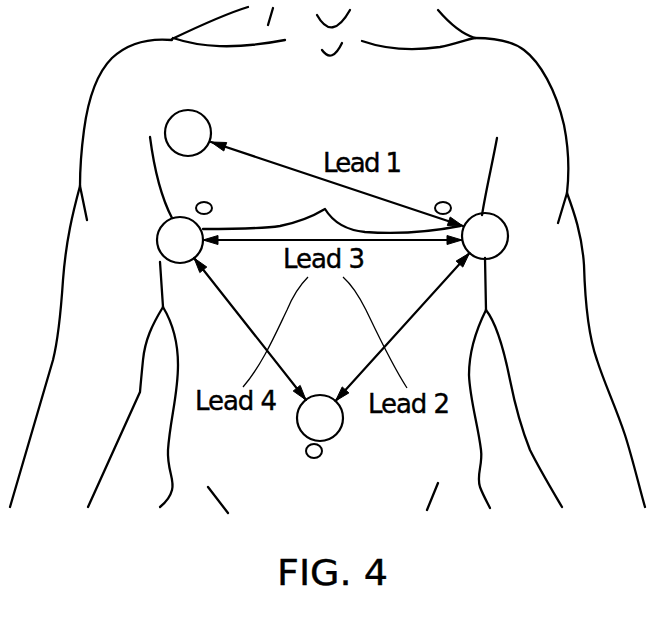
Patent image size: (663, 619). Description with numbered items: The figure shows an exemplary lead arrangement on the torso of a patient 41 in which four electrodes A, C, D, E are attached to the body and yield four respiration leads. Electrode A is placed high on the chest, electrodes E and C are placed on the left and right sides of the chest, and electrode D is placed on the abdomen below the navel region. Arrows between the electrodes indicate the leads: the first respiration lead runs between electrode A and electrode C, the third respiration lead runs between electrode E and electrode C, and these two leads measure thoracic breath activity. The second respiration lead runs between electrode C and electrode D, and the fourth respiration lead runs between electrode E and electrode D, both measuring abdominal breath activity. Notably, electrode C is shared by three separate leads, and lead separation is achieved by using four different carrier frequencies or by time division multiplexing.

The patient 41 is at (525, 70).
The electrode A is at (188, 133).
The electrode C is at (485, 236).
The electrode D is at (320, 418).
The electrode E is at (180, 240).